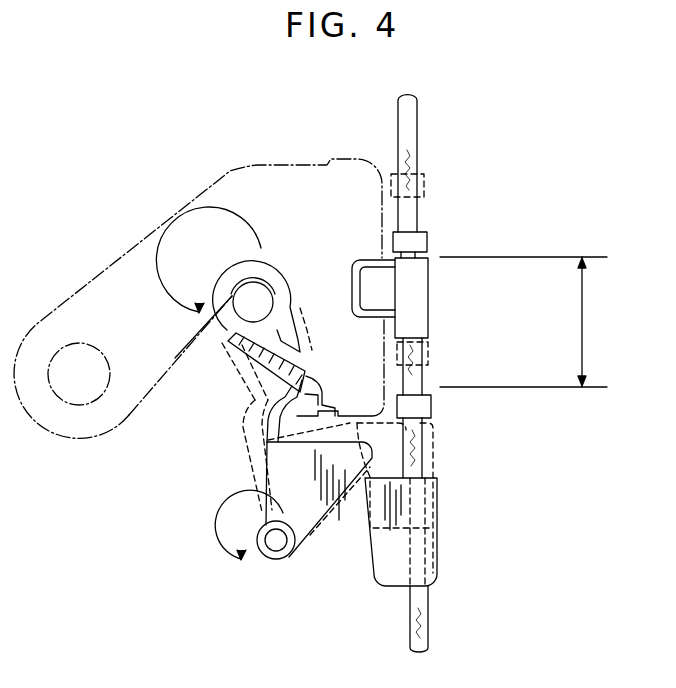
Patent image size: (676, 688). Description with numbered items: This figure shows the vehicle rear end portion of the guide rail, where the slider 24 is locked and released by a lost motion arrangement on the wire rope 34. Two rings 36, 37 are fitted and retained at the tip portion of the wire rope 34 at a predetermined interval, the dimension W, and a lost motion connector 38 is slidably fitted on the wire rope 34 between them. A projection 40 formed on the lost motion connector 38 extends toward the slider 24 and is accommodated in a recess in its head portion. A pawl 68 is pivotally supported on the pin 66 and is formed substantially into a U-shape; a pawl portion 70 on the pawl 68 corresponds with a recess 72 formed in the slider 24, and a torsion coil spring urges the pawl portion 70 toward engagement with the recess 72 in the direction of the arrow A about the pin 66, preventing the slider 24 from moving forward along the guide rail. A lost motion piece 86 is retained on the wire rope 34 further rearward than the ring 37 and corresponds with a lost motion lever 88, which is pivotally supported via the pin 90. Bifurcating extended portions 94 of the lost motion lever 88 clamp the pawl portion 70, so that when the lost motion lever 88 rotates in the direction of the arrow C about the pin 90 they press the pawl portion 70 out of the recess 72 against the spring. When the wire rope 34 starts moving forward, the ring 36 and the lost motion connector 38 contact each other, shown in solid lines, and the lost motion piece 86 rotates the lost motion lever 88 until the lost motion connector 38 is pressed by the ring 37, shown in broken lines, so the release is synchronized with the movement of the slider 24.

The slider 24 is at (123, 252).
The wire rope 34 is at (417, 137).
The ring 36 is at (428, 247).
The ring 37 is at (431, 408).
The lost motion connector 38 is at (428, 298).
The projection 40 is at (368, 271).
The pin 66 is at (258, 290).
The pawl 68 is at (222, 328).
The pawl portion 70 is at (311, 386).
The recess 72 is at (303, 360).
The lost motion piece 86 is at (437, 497).
The lost motion lever 88 is at (336, 512).
The pin 90 is at (277, 560).
The extended portions 94 is at (318, 401).
The arrow A is at (217, 259).
The arrow C is at (242, 526).
The dimension W is at (584, 320).